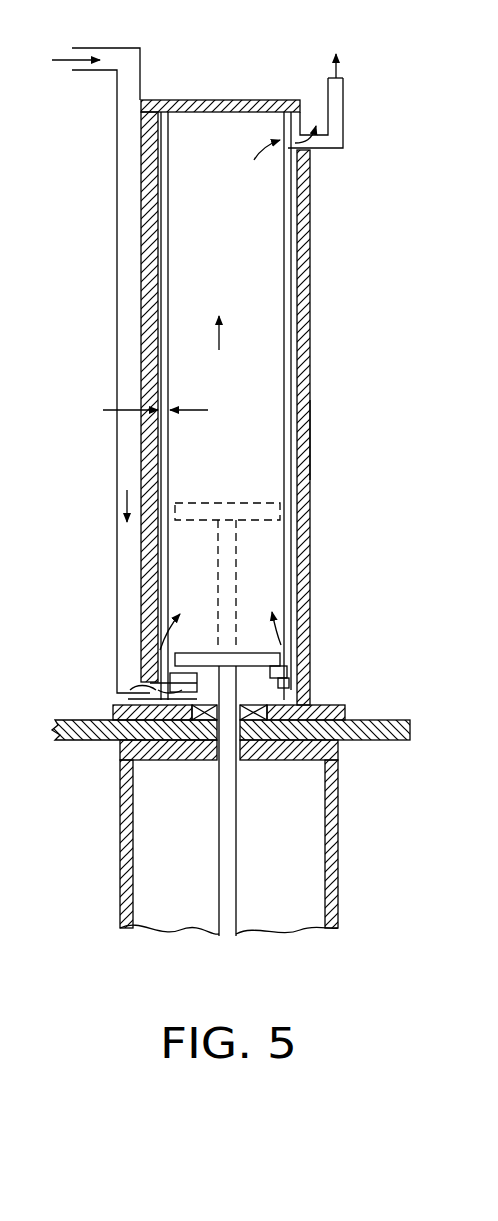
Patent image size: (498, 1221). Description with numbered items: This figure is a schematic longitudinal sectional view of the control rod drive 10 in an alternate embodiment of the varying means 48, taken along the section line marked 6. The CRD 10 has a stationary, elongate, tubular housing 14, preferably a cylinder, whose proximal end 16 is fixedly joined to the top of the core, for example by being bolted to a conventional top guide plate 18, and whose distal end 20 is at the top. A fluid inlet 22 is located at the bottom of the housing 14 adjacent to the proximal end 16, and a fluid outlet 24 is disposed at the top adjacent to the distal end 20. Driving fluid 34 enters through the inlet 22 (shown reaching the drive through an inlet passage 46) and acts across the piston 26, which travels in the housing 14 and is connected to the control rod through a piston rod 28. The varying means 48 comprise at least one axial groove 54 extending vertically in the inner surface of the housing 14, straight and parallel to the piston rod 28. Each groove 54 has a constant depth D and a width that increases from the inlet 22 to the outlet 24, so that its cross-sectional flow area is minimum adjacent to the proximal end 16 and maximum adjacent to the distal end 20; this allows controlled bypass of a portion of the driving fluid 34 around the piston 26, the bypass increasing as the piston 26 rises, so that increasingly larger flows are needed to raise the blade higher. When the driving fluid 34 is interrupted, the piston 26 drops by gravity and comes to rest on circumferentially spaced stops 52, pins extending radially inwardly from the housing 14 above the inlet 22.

The section line 6- 6 is at (204, 12).
The control rod drive 10 is at (314, 196).
The housing 14 is at (311, 452).
The proximal end 16 is at (336, 706).
The top guide plate 18 is at (405, 722).
The distal end 20 is at (200, 100).
The fluid inlet 22 is at (126, 702).
The fluid outlet 24 is at (344, 140).
The piston 26 is at (276, 654).
The rod 28 is at (218, 858).
The driving fluid 34 is at (64, 62).
The inlet duct 46 is at (100, 48).
The varying means 48 is at (280, 304).
The stops 52 is at (290, 680).
The axial groove 54 is at (283, 234).
The groove depth D is at (112, 412).